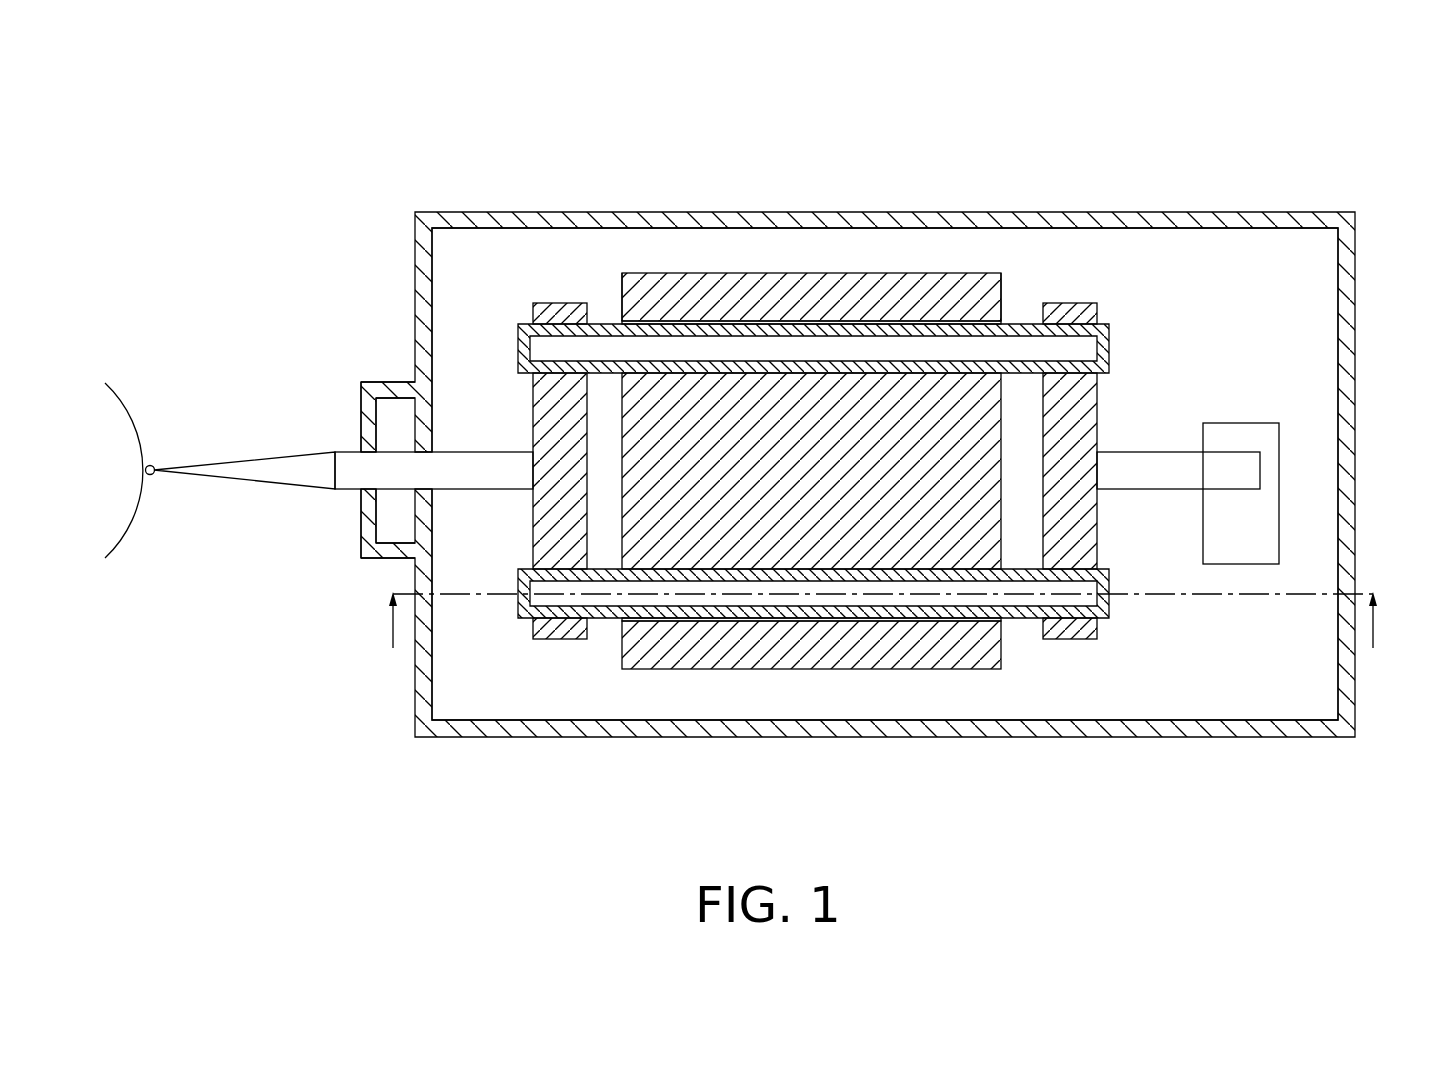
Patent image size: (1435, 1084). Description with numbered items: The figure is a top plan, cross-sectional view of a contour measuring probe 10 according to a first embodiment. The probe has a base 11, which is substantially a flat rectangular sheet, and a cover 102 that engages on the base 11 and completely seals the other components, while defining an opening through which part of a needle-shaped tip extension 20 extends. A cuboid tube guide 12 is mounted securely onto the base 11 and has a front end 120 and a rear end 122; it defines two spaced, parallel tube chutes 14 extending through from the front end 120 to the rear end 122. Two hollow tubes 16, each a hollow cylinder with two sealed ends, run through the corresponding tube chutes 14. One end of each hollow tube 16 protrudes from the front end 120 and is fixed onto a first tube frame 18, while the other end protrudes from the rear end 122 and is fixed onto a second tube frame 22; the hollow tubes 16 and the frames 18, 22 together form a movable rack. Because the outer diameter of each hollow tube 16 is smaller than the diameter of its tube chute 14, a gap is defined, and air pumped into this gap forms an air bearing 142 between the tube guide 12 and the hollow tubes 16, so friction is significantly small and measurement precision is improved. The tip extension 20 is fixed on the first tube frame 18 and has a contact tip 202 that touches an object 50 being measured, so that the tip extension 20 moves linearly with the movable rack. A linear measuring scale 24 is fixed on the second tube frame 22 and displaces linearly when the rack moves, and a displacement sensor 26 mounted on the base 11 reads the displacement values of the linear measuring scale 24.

The contour measuring probe 10 is at (477, 145).
The cover 102 is at (1222, 220).
The base 11 is at (524, 257).
The tip extension 20 is at (473, 473).
The linear measuring scale 24 is at (1243, 468).
The contact tip 202 is at (153, 452).
The object 50 is at (135, 418).
The displacement sensor 26 is at (1260, 546).
The first tube frame 18 is at (557, 412).
The second tube frame 22 is at (1097, 303).
The air bearing 142 is at (962, 325).
The tube guide 12 is at (878, 300).
The front end 120 is at (619, 297).
The rear end 122 is at (1003, 293).
The tube chute 14 is at (808, 322).
The hollow tube 16 is at (704, 328).